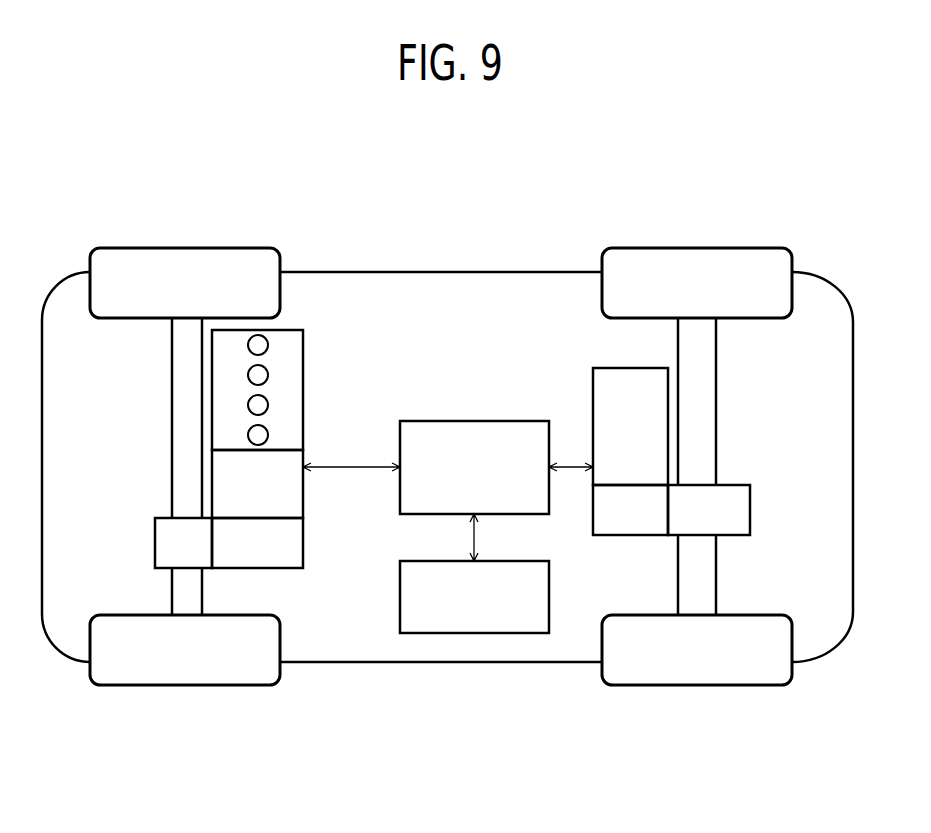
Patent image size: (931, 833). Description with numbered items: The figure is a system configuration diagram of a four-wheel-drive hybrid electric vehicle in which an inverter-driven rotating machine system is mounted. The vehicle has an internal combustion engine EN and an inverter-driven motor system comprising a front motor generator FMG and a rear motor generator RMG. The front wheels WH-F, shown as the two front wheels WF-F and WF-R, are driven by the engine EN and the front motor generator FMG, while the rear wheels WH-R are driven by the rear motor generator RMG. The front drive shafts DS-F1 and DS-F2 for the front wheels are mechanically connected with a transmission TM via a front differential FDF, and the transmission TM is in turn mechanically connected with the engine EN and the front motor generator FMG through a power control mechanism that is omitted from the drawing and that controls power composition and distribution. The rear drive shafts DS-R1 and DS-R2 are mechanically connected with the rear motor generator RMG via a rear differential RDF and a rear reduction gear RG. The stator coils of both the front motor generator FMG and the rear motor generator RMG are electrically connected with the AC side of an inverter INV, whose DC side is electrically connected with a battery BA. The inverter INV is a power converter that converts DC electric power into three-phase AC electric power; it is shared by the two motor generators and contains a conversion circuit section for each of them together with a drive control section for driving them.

The front wheel WF-F is at (194, 248).
The front wheel WF-R is at (705, 248).
The front wheels WH-F is at (190, 686).
The rear wheels WH-R is at (697, 686).
The front drive shaft DS-F1 is at (172, 420).
The front drive shaft DS-F2 is at (172, 592).
The rear drive shaft DS-R1 is at (717, 376).
The rear drive shaft DS-R2 is at (747, 575).
The front differential FDF is at (156, 547).
The rear differential RDF is at (752, 510).
The internal combustion engine EN is at (296, 354).
The front motor generator FMG is at (292, 498).
The transmission TM is at (295, 541).
The inverter INV is at (474, 421).
The battery BA is at (550, 590).
The rear motor generator RMG is at (593, 382).
The rear reduction gear RG is at (593, 527).